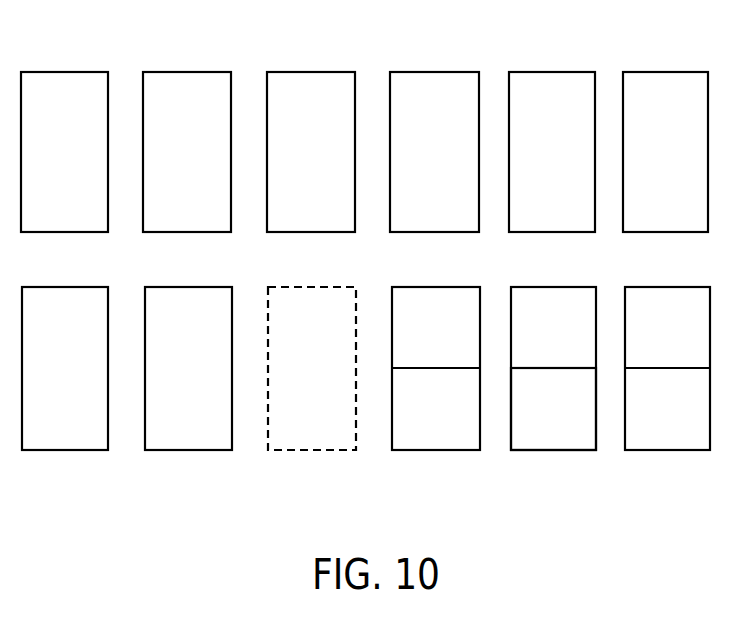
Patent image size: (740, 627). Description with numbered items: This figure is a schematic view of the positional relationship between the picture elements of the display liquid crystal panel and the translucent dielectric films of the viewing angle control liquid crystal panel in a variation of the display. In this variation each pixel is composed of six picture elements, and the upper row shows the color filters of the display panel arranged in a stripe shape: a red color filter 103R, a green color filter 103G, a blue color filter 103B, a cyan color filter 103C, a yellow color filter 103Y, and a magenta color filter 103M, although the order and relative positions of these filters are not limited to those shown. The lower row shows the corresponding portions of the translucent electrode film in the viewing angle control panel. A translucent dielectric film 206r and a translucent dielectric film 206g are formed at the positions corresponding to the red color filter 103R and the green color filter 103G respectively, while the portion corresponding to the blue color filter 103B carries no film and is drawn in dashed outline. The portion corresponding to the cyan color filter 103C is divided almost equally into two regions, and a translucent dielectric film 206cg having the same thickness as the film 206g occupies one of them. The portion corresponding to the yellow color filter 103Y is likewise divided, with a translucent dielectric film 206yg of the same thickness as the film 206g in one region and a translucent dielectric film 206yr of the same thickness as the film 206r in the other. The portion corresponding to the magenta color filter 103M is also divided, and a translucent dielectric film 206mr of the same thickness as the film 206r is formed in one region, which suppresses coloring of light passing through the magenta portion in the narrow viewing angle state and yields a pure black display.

The red color filter 103R is at (42, 82).
The green color filter 103G is at (164, 82).
The blue color filter 103B is at (288, 82).
The cyan color filter 103C is at (412, 82).
The yellow color filter 103Y is at (529, 82).
The magenta color filter 103M is at (644, 82).
The translucent dielectric film 206r is at (66, 437).
The translucent dielectric film 206g is at (186, 437).
The translucent dielectric film 206cg is at (422, 307).
The translucent dielectric film 206yr is at (536, 307).
The translucent dielectric film 206yg is at (550, 437).
The translucent dielectric film 206mr is at (663, 437).